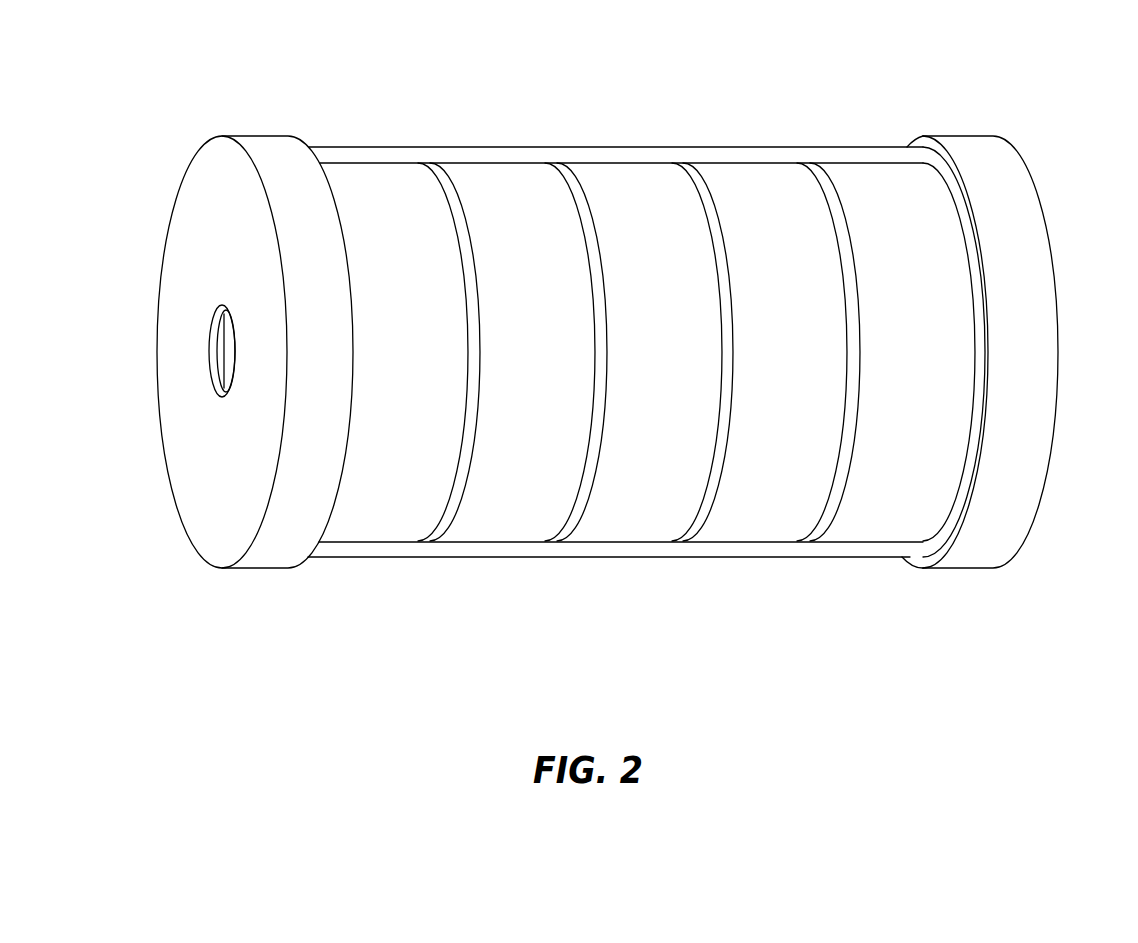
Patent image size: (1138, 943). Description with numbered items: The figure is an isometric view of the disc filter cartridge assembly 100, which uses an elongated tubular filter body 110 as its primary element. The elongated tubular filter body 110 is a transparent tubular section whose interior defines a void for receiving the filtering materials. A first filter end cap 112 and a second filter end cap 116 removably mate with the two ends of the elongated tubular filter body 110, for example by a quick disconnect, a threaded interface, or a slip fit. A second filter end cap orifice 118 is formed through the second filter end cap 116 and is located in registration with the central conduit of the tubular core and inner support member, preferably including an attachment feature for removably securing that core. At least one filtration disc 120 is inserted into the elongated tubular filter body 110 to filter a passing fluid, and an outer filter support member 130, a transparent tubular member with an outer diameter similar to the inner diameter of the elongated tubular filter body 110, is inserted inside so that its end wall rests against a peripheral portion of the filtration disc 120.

The disc filter cartridge assembly 100 is at (606, 334).
The elongated tubular filter body 110 is at (497, 557).
The first filter end cap 112 is at (1030, 535).
The second filter end cap 116 is at (212, 538).
The second filter end cap orifice 118 is at (213, 362).
The filtration disc 120 is at (716, 218).
The outer filter support member 130 is at (636, 520).